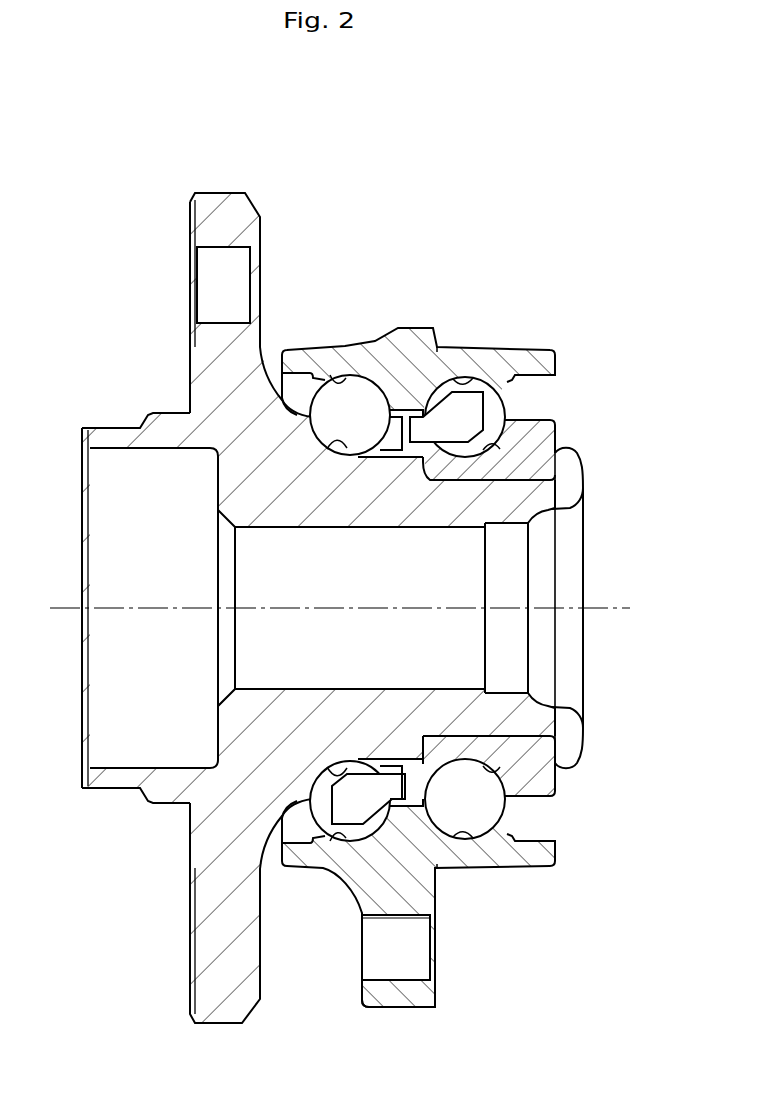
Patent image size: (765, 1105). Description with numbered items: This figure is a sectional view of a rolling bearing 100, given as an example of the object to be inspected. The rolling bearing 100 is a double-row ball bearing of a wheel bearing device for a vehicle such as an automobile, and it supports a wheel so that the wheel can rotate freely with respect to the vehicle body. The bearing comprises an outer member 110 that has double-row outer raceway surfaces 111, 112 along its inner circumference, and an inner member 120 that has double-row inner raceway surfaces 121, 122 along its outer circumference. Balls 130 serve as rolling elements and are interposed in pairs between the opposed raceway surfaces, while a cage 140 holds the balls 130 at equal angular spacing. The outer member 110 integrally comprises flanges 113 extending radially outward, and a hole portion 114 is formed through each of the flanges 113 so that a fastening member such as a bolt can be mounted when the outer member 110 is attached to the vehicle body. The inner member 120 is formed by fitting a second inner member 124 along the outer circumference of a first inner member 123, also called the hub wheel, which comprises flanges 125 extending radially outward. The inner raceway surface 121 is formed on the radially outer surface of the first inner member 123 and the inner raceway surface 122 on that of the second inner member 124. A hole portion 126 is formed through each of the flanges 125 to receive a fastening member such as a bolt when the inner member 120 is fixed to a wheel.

The rolling bearing 100 is at (120, 225).
The outer member 110 is at (411, 338).
The outer raceway surface 111 is at (337, 384).
The outer raceway surface 112 is at (477, 377).
The flange 113 is at (410, 1000).
The hole portion 114 is at (407, 920).
The inner member 120 is at (206, 412).
The inner raceway surface 121 is at (340, 448).
The inner raceway surface 122 is at (516, 425).
The first inner member 123 is at (428, 514).
The second inner member 124 is at (540, 780).
The flange 125 is at (216, 212).
The hole portion 126 is at (216, 313).
The ball 130 is at (359, 400).
The cage 140 is at (350, 808).